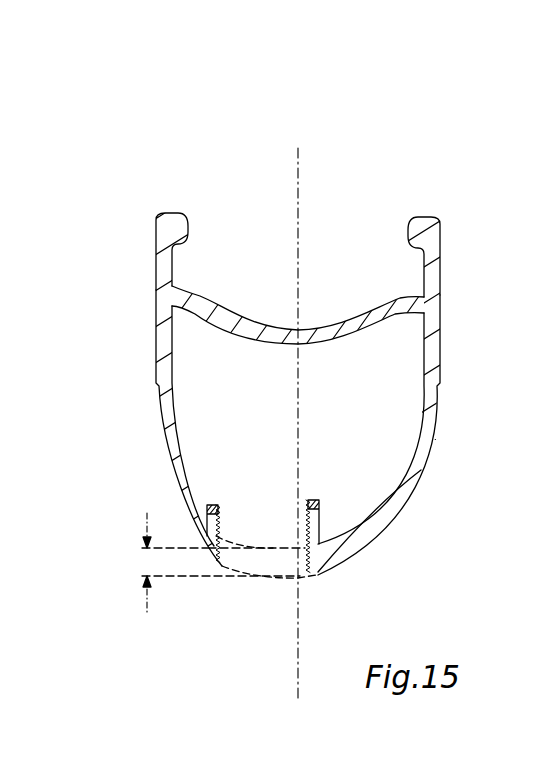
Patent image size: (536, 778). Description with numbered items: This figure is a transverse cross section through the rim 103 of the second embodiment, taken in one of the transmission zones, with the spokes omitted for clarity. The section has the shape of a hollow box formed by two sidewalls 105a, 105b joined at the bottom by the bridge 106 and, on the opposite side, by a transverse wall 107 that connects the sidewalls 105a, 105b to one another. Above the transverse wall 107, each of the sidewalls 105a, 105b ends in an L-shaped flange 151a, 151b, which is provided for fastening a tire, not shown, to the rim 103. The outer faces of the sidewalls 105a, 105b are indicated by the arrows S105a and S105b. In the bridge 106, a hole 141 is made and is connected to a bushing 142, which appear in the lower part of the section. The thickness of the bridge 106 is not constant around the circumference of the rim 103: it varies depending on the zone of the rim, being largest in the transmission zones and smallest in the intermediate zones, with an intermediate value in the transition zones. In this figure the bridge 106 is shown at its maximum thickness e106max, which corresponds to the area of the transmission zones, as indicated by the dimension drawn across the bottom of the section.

The rim 103 is at (186, 156).
The L-shaped flange 151a is at (134, 213).
The L-shaped flange 151b is at (462, 213).
The outer surface of first side wall S105a is at (148, 308).
The outer surface of second side wall S105b is at (452, 318).
The transverse wall 107 is at (328, 325).
The sidewall 105a is at (165, 442).
The sidewall 105b is at (422, 447).
The bridge 106 is at (362, 537).
The hole 141 is at (255, 584).
The bushing 142 is at (318, 517).
The maximum thickness e106max is at (188, 562).